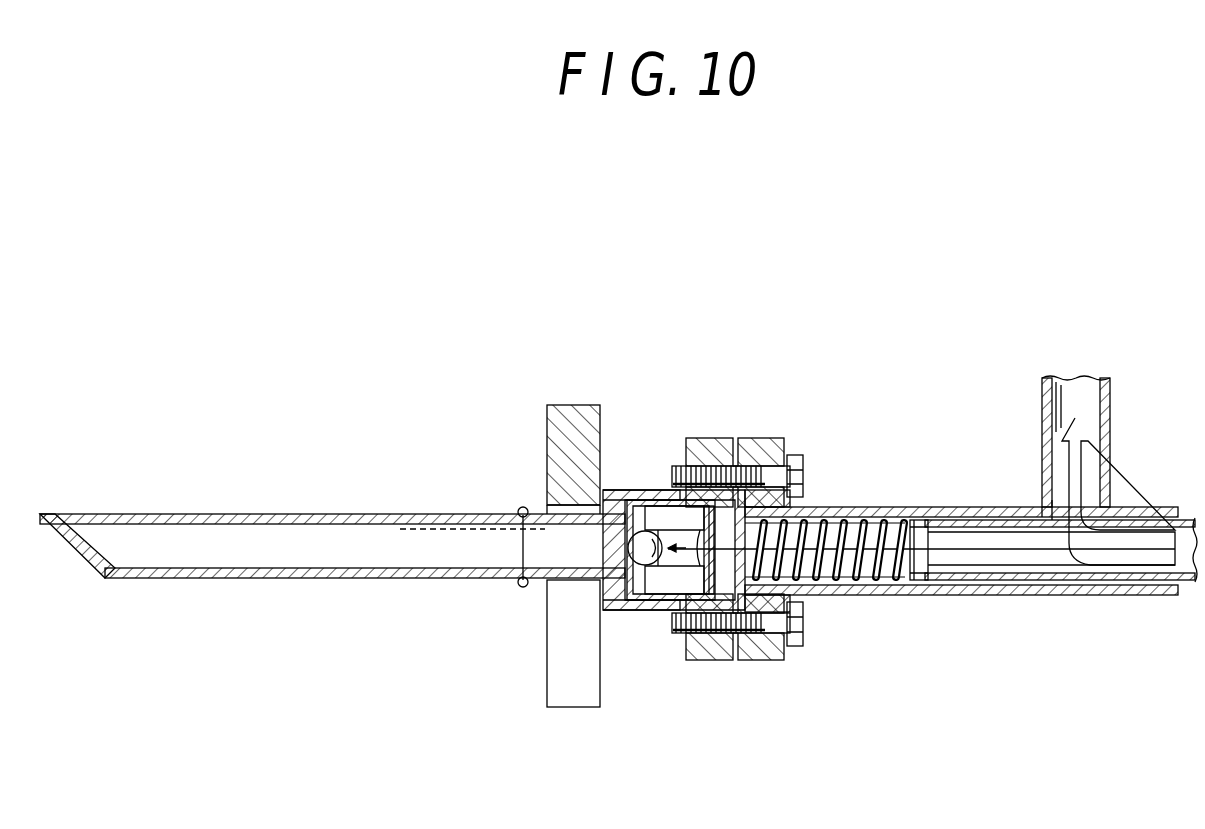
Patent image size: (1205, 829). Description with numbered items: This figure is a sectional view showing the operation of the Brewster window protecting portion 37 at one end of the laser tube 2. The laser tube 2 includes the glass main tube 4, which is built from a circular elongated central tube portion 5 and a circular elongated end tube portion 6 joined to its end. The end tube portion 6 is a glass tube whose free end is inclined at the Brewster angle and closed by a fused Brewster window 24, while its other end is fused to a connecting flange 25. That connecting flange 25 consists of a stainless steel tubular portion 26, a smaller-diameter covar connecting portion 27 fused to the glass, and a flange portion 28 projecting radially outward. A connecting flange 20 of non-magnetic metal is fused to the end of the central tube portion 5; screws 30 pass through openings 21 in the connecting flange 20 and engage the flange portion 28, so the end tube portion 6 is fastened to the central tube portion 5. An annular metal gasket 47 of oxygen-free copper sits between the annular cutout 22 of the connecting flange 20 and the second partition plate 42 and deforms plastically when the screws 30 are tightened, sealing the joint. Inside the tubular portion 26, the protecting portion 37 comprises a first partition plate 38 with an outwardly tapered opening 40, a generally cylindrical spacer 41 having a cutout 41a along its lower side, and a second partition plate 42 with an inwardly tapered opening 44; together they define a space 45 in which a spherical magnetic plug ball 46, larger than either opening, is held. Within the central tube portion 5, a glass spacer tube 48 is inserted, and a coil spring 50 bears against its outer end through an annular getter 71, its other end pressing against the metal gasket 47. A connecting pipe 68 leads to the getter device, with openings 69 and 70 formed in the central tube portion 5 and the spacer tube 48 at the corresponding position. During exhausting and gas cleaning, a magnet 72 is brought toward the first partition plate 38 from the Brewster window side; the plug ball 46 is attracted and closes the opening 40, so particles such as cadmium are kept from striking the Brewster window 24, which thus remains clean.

The laser tube 2 is at (933, 507).
The glass main tube 4 is at (598, 198).
The central tube portion 5 is at (893, 507).
The end tube portion 6 is at (290, 512).
The connecting flange 20 is at (773, 440).
The opening 21 is at (793, 470).
The annular cutout 22 is at (768, 660).
The Brewster window 24 is at (66, 548).
The connecting flange 25 is at (702, 660).
The tubular portion 26 is at (613, 612).
The connecting portion 27 is at (522, 588).
The flange portion 28 is at (690, 660).
The screw 30 is at (803, 476).
The Brewster window protecting portion 37 is at (638, 488).
The first partition plate 38 is at (625, 490).
The opening 40 is at (547, 508).
The spacer 41 is at (643, 480).
The cutout 41a is at (660, 490).
The second partition plate 42 is at (713, 487).
The opening 44 is at (728, 477).
The space 45 is at (661, 564).
The plug ball 46 is at (590, 612).
The metal gasket 47 is at (750, 660).
The spacer tube 48 is at (1167, 583).
The coil spring 50 is at (892, 595).
The connecting pipe 68 is at (1042, 420).
The opening 69 is at (1046, 503).
The opening 70 is at (1092, 515).
The getter 71 is at (920, 595).
The magnet 72 is at (550, 670).